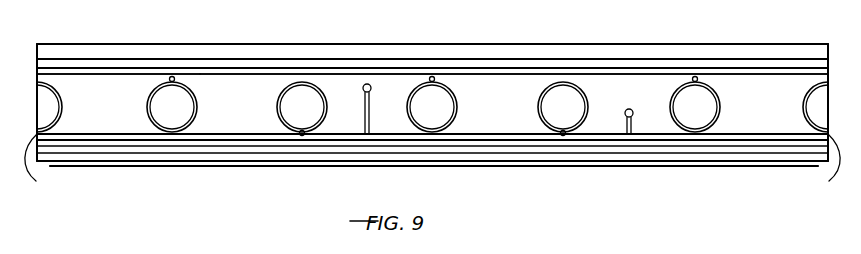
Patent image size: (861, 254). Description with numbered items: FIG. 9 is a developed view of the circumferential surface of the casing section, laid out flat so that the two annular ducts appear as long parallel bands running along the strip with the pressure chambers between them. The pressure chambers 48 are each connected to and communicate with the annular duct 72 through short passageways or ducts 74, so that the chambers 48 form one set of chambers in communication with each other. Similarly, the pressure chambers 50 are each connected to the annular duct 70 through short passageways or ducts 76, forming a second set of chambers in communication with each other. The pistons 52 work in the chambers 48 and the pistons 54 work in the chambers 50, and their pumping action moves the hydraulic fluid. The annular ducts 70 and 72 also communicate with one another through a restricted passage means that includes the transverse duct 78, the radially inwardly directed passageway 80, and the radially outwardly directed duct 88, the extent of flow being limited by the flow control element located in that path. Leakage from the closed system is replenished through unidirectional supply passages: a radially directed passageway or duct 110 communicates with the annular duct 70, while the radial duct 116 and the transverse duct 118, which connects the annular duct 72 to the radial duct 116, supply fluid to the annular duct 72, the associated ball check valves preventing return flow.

The pressure chambers 48 is at (194, 101).
The pressure chambers 50 is at (62, 107).
The pistons 52 is at (181, 123).
The pistons 54 is at (308, 109).
The annular duct 70 is at (476, 137).
The annular duct 72 is at (476, 75).
The short passageways or ducts 74 is at (173, 77).
The short passageways or ducts 76 is at (562, 136).
The transverse duct 78 is at (633, 122).
The radially inwardly directed passageway 80 is at (631, 110).
The radially outwardly directed duct 88 is at (631, 74).
The radially directed passageway or duct 110 is at (107, 76).
The radial duct 116 is at (369, 84).
The transverse duct 118 is at (370, 112).